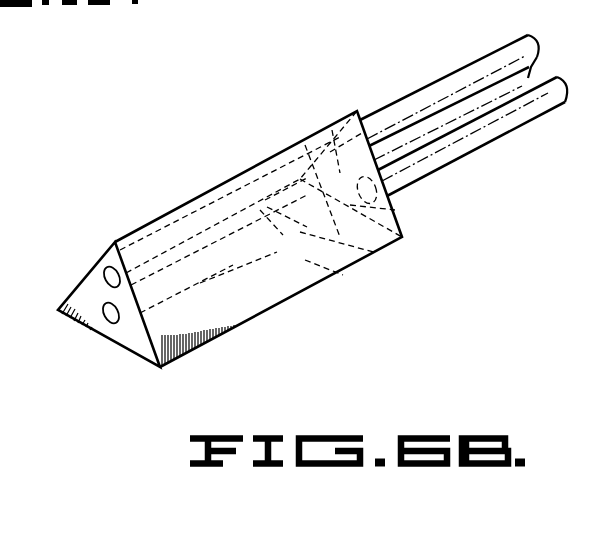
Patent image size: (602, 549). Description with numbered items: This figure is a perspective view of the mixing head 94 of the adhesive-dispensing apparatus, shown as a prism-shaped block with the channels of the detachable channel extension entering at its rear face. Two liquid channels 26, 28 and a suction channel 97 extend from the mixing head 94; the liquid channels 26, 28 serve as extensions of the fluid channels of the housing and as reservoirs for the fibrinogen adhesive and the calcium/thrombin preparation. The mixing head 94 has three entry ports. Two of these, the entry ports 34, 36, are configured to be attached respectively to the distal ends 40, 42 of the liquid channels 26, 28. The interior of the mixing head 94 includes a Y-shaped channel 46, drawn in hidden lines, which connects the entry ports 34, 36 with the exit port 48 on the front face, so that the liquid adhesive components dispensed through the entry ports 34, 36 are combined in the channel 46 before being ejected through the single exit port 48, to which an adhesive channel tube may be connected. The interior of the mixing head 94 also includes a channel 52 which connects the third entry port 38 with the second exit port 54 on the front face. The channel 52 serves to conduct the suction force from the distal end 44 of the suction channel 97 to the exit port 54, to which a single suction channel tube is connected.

The mixing head 94 is at (232, 176).
The exit port 54 is at (102, 272).
The exit port 48 is at (107, 317).
The suction channel 97 is at (481, 58).
The liquid channel 28 is at (530, 69).
The liquid channel 26 is at (530, 123).
The channel 52 is at (257, 182).
The distal end of suction channel 44 is at (306, 149).
The entry port 38 is at (362, 123).
The entry port 34 is at (395, 210).
The entry port 36 is at (377, 253).
The distal end of liquid channel 40 is at (343, 275).
The distal end of liquid channel 42 is at (296, 240).
The Y-shaped channel 46 is at (242, 267).